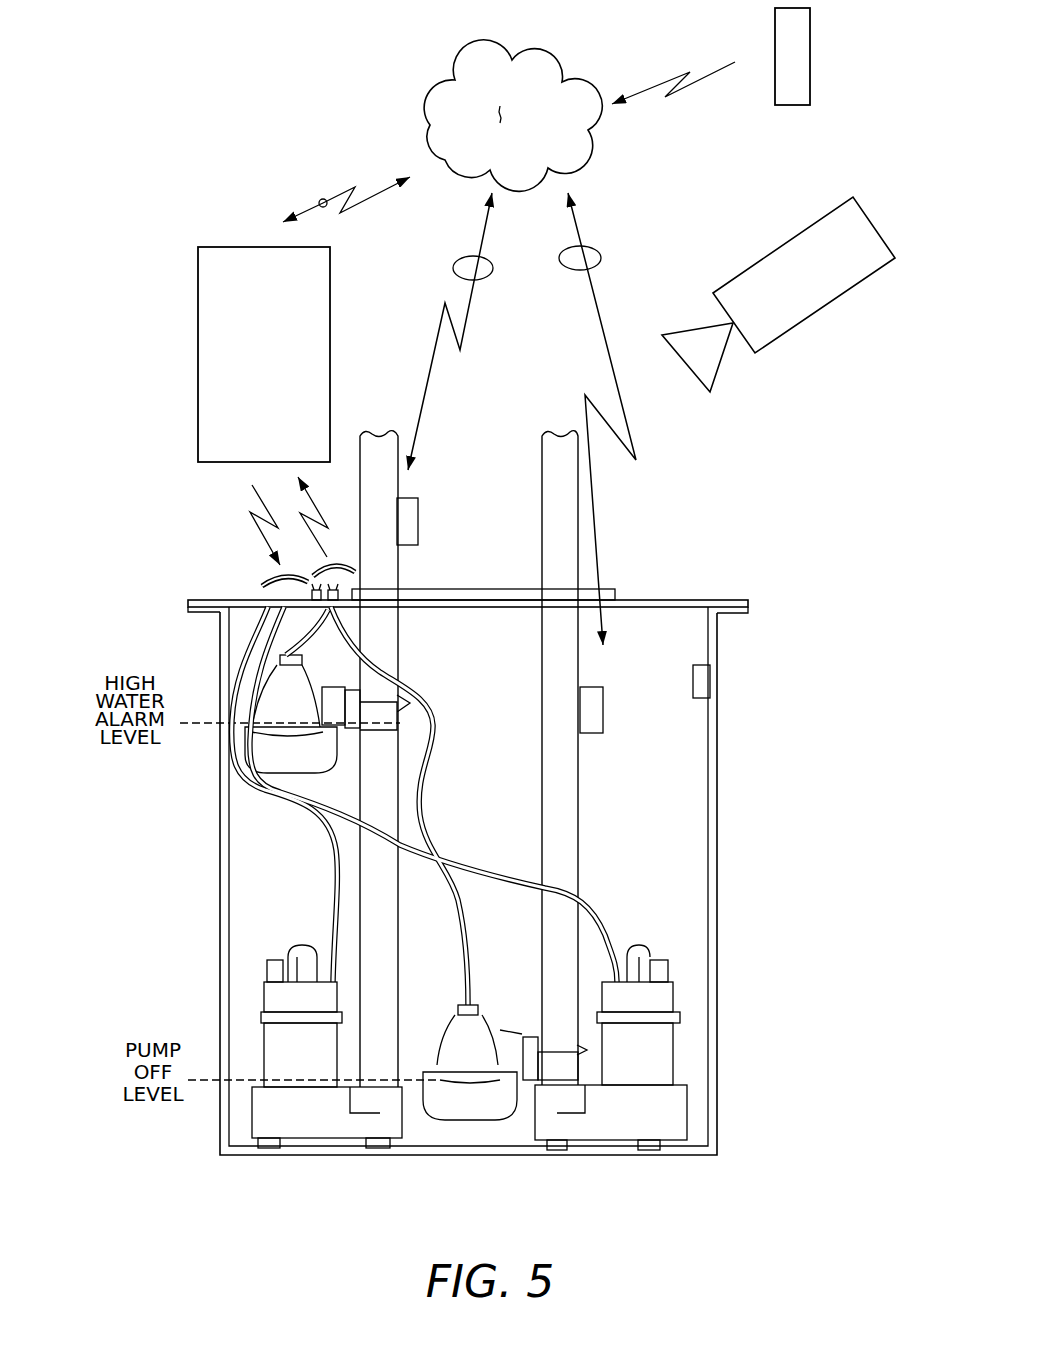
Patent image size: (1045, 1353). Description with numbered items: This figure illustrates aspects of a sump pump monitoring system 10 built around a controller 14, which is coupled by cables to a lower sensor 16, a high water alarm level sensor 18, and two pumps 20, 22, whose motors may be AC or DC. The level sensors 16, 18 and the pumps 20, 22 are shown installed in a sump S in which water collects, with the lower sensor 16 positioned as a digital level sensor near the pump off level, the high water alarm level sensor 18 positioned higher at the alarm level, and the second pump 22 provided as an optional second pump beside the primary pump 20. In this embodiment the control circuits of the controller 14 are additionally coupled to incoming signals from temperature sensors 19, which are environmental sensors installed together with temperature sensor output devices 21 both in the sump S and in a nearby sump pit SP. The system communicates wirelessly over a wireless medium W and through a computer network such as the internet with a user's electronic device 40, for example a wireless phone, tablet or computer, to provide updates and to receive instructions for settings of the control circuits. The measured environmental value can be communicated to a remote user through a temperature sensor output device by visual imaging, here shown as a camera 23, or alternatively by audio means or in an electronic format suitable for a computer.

The system 10 is at (176, 57).
The controller 14 is at (207, 247).
The user's electronic device 40 is at (790, 108).
The temperature sensor output device 21 is at (418, 517).
The camera 23 is at (830, 305).
The temperature sensor 19 is at (603, 712).
The high water alarm level sensor 18 is at (570, 735).
The lower sensor 16 is at (633, 995).
The pump 20 is at (225, 1075).
The pump 22 is at (720, 1071).
The wireless medium W is at (455, 265).
The sump S is at (703, 652).
The sump pit SP is at (683, 602).